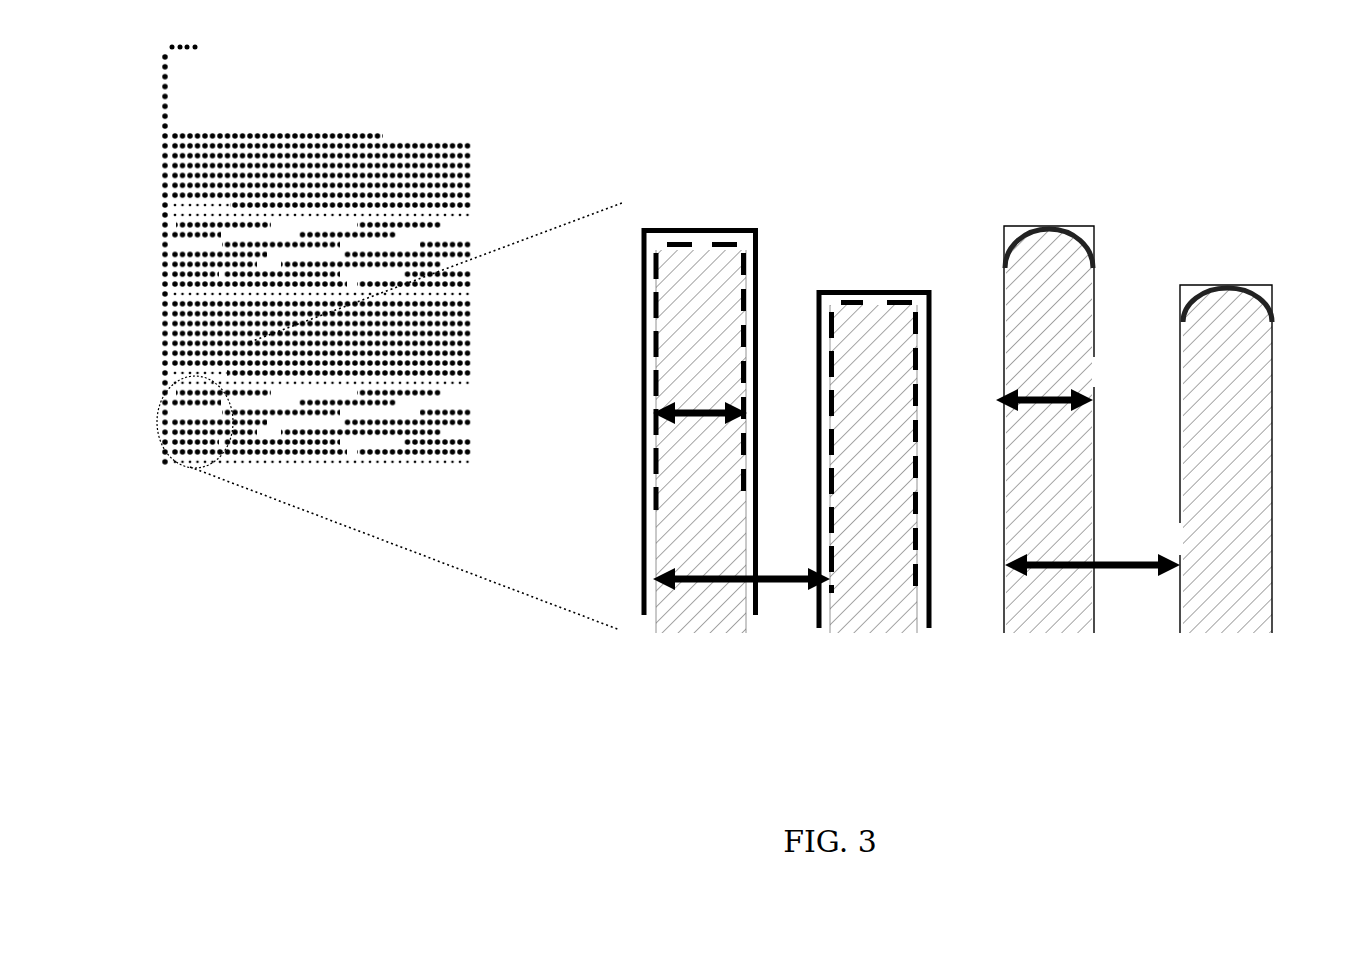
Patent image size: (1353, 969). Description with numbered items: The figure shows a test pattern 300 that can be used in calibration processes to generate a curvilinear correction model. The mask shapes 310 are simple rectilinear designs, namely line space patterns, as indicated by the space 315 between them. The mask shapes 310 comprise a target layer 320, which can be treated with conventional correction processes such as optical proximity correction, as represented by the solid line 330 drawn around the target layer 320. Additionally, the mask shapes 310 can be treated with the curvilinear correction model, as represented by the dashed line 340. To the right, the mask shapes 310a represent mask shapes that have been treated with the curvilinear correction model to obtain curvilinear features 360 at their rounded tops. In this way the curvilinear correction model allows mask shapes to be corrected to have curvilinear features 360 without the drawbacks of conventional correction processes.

The test pattern 300 is at (475, 148).
The mask shapes 310 is at (730, 440).
The mask shapes treated with curvilinear correction model 310a is at (1137, 433).
The space 315 is at (663, 578).
The target layer 320 is at (682, 368).
The solid line 330 is at (688, 226).
The dashed line 340 is at (872, 299).
The curvilinear features 360 is at (1198, 283).